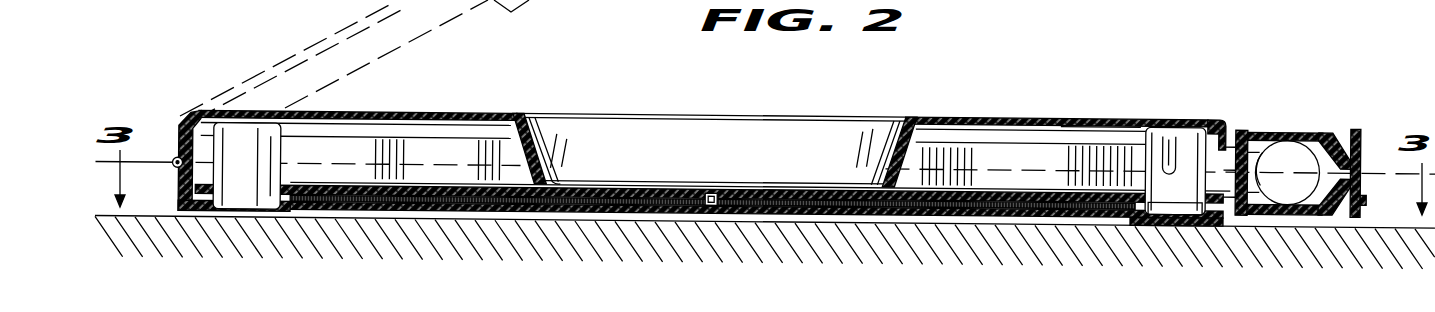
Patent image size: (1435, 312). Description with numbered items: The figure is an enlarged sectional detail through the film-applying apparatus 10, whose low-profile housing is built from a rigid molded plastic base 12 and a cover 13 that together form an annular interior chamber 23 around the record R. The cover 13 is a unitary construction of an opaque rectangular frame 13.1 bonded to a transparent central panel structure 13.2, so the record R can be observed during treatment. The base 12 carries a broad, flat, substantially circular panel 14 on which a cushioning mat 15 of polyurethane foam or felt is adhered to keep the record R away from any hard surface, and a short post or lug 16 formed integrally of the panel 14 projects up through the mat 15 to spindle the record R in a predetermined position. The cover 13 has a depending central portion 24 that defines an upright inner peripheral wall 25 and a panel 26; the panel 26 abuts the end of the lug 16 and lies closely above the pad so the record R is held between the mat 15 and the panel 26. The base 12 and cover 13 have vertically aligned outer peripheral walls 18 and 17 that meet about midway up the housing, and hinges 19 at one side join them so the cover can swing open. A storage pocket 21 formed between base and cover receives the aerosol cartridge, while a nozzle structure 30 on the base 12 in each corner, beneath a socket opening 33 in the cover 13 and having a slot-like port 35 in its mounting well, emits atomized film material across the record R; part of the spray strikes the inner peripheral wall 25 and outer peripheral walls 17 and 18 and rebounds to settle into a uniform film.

The apparatus 10 is at (580, 110).
The base 12 is at (1014, 213).
The cover 13 is at (1020, 118).
The rectangular frame 13.1 is at (1266, 130).
The transparent central panel structure 13.2 is at (456, 110).
The circular panel 14 is at (806, 213).
The cushioning mat 15 is at (614, 200).
The post or lug 16 is at (713, 191).
The outer peripheral wall of the cover 17 is at (173, 150).
The outer peripheral wall of the base 18 is at (180, 198).
The hinges 19 is at (175, 168).
The storage pocket 21 is at (1302, 160).
The interior chamber 23 is at (1079, 131).
The depending central portion 24 is at (584, 181).
The inner peripheral wall 25 is at (516, 138).
The panel 26 is at (784, 188).
The nozzle structure 30 is at (1187, 190).
The socket openings 33 is at (253, 110).
The slot-like port 35 is at (281, 150).
The record R is at (993, 200).